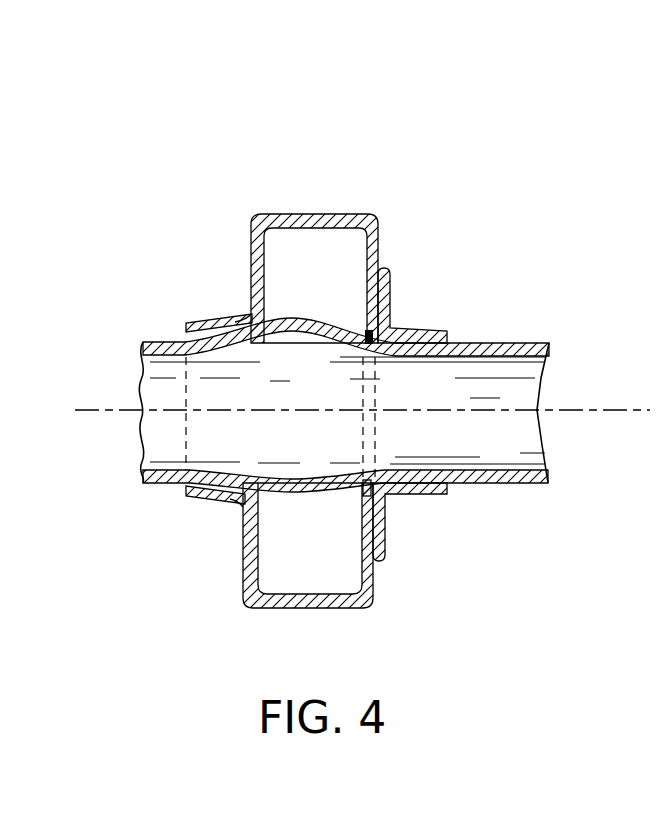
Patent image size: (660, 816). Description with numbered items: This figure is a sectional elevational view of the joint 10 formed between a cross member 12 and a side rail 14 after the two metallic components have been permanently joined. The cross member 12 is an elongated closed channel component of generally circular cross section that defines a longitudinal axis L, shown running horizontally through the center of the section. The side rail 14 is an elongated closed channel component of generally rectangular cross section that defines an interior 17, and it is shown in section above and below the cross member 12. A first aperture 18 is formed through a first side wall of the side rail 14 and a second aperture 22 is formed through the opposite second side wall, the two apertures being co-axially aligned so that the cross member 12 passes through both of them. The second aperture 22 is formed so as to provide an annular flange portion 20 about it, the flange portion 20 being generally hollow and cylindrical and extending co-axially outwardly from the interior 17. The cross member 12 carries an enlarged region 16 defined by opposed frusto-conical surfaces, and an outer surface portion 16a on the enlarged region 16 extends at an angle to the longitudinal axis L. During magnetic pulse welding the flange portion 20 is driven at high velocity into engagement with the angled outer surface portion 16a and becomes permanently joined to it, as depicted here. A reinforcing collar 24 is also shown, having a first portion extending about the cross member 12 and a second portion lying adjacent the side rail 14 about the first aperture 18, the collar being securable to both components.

The joint 10 is at (468, 164).
The cross member 12 is at (530, 343).
The side rail 14 is at (305, 214).
The enlarged region 16 is at (281, 316).
The outer surface portion 16a is at (231, 320).
The interior 17 is at (305, 553).
The first aperture 18 is at (405, 392).
The flange portion 20 is at (215, 320).
The second aperture 22 is at (189, 393).
The reinforcing collar 24 is at (394, 330).
The longitudinal axis L is at (598, 410).